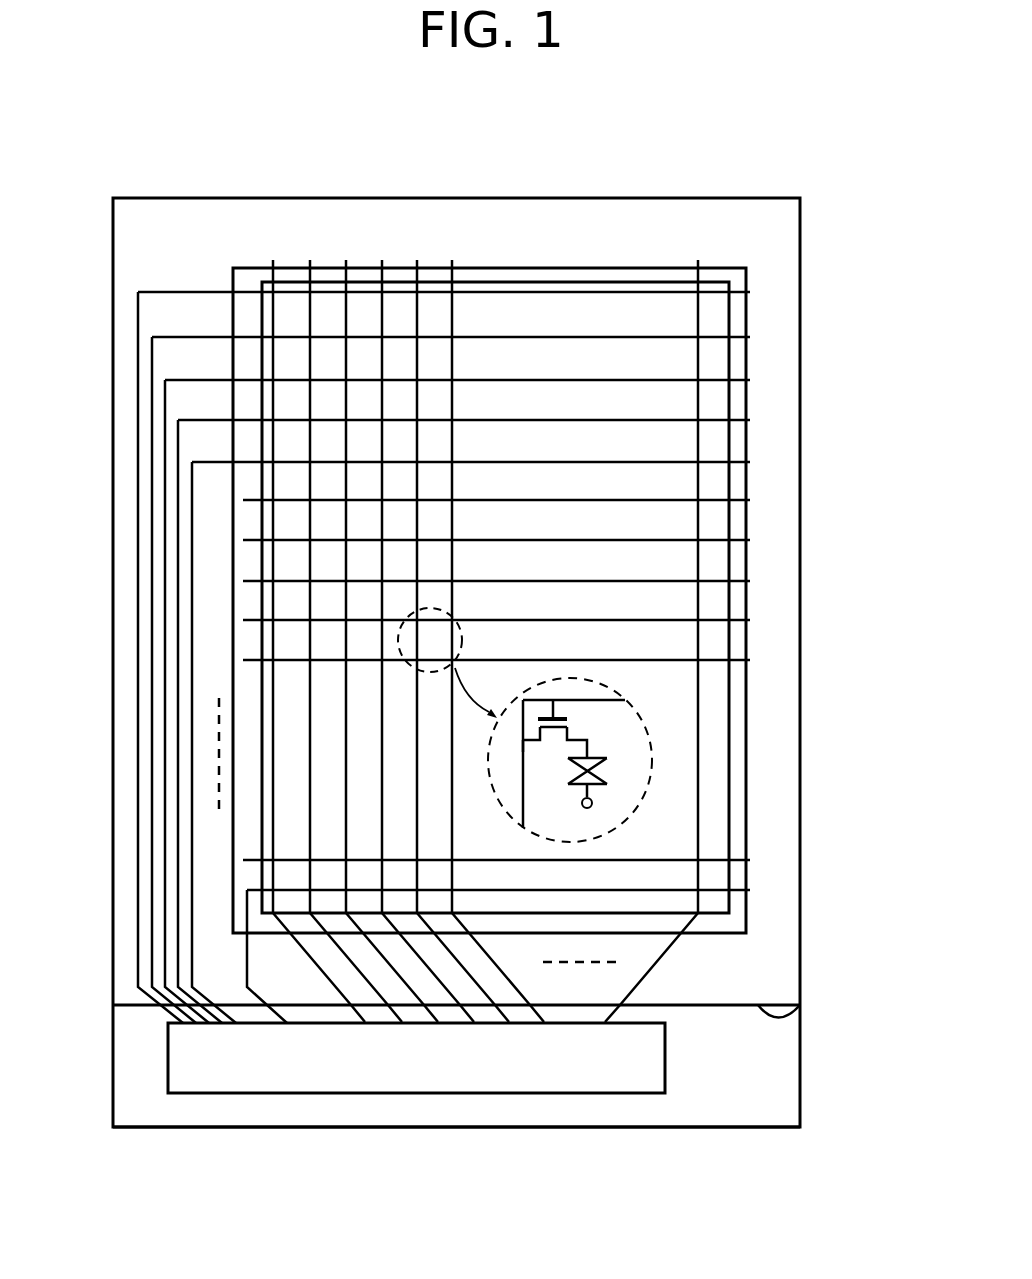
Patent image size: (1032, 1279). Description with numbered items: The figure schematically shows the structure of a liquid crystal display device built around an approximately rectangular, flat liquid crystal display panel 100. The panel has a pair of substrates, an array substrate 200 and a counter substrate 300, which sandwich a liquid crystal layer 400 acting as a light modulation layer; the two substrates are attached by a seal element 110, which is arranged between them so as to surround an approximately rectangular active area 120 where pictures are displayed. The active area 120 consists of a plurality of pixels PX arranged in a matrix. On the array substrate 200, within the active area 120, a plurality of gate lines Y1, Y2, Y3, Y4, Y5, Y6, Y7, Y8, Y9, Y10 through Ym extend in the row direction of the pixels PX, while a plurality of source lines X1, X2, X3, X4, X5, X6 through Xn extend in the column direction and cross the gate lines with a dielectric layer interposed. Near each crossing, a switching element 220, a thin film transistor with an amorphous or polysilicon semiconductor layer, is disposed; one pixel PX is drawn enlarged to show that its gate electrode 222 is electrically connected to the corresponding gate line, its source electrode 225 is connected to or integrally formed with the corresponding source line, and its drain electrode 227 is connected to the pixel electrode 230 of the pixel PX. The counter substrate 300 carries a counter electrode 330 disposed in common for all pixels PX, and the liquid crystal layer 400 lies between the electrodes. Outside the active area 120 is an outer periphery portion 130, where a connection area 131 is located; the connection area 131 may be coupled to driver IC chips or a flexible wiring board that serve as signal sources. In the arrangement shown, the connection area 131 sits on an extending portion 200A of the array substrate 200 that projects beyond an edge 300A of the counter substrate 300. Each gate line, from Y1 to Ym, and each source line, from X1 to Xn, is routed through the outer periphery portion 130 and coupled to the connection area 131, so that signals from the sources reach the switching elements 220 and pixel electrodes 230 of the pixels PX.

The liquid crystal display panel 100 is at (810, 192).
The seal element 110 is at (746, 359).
The active area 120 is at (718, 283).
The outer periphery portion 130 is at (165, 232).
The connection area 131 is at (168, 1050).
The array substrate 200 is at (800, 1100).
The extending portion 200A is at (712, 1108).
The counter substrate 300 is at (800, 945).
The edge of the counter substrate 300A is at (800, 1005).
The pixel PX is at (655, 762).
The switching element 220 is at (586, 724).
The gate electrode 222 is at (575, 701).
The source electrode 225 is at (515, 750).
The drain electrode 227 is at (575, 742).
The pixel electrode 230 is at (606, 757).
The counter electrode 330 is at (583, 793).
The liquid crystal layer 400 is at (603, 775).
The source line X1 is at (274, 262).
The source line X2 is at (311, 272).
The source line X3 is at (347, 262).
The source line X4 is at (383, 272).
The source line X5 is at (418, 262).
The source line X6 is at (453, 272).
The source line Xn is at (697, 277).
The gate line Y1 is at (542, 292).
The gate line Y2 is at (512, 337).
The gate line Y3 is at (512, 380).
The gate line Y4 is at (512, 420).
The gate line Y5 is at (512, 462).
The gate line Y6 is at (512, 500).
The gate line Y7 is at (512, 540).
The gate line Y8 is at (512, 581).
The gate line Y9 is at (512, 620).
The gate line Y10 is at (512, 660).
The gate line Ym is at (503, 890).